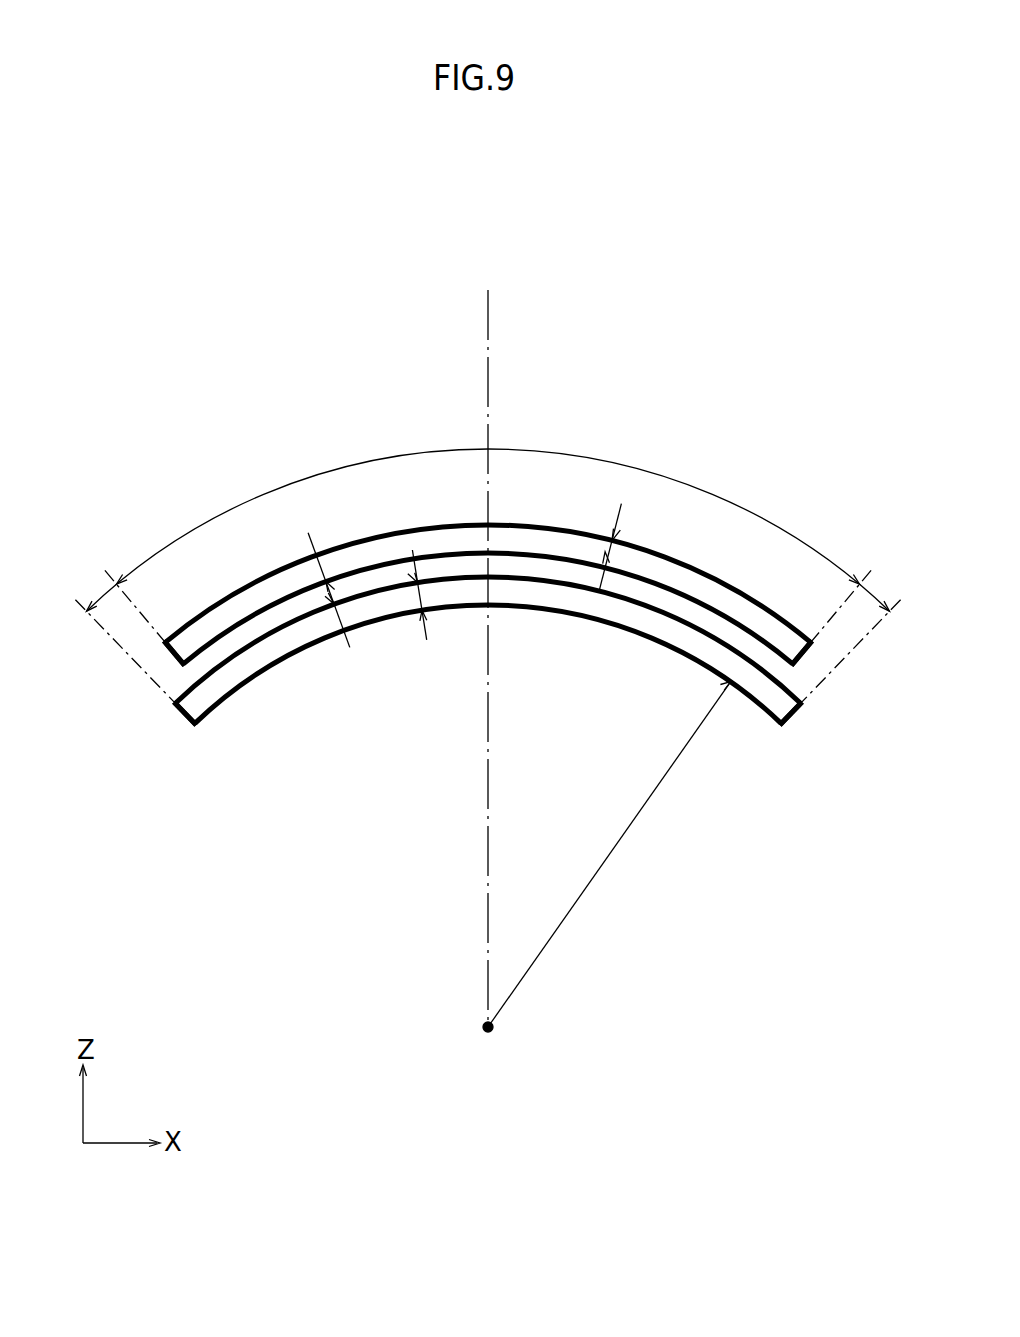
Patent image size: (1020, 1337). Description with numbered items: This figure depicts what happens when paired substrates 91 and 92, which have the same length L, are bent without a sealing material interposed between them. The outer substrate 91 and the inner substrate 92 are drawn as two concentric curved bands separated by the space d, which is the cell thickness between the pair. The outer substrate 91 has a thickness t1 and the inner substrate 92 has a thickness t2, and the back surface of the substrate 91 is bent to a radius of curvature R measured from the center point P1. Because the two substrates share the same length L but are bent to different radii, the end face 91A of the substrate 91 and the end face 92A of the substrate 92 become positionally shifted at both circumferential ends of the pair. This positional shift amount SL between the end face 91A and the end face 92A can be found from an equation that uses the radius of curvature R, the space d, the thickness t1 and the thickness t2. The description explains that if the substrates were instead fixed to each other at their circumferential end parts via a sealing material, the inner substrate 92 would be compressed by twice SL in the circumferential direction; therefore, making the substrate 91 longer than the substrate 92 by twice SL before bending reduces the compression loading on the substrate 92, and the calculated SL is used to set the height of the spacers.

The substrate 91 is at (185, 637).
The substrate 92 is at (207, 692).
The end face 91A is at (170, 647).
The end face 92A is at (180, 717).
The positional shift amount SL is at (490, 635).
The length L is at (509, 658).
The center of curvature P1 is at (487, 1045).
The radius of curvature R is at (609, 854).
The space (cell thickness) d is at (329, 581).
The thickness of the outer substrate t1 is at (625, 544).
The thickness of the inner substrate t2 is at (432, 598).